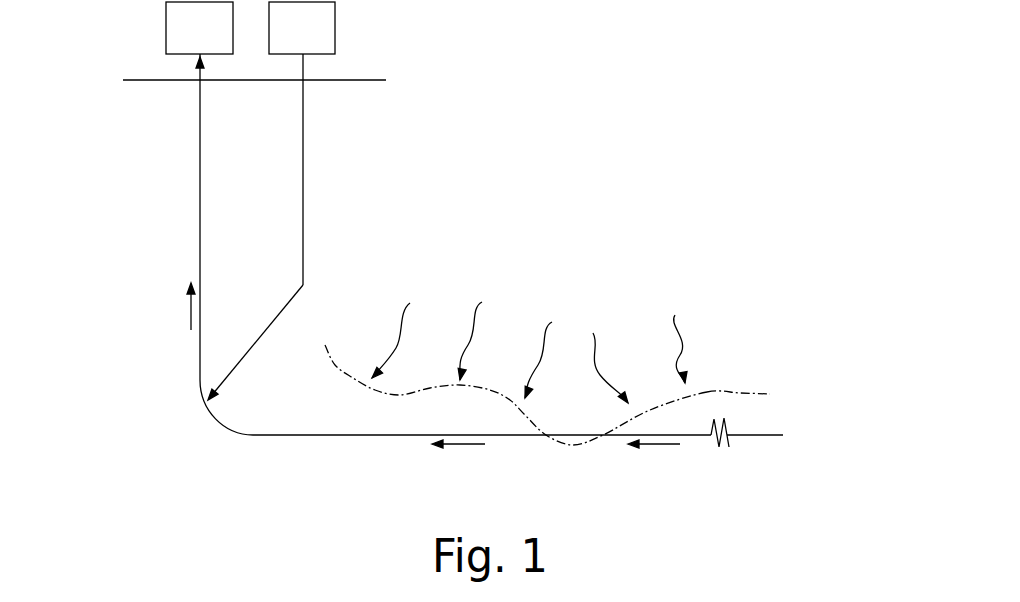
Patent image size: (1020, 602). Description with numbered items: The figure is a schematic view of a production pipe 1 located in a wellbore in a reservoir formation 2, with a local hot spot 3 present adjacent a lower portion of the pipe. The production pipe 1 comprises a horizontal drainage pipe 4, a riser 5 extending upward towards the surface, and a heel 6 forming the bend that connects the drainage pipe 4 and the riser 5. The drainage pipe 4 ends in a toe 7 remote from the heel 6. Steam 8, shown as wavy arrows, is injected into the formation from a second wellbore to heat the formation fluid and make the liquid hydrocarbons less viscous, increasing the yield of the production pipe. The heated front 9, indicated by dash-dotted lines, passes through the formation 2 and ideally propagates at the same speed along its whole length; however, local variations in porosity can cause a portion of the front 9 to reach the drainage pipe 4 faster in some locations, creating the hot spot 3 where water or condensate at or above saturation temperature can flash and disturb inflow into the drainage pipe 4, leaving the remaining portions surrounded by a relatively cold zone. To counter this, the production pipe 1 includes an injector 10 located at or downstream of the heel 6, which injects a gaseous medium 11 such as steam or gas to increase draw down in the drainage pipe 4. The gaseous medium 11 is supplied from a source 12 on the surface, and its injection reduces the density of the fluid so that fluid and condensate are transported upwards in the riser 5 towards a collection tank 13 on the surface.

The production pipe 1 is at (116, 301).
The reservoir formation 2 is at (461, 222).
The local hot spot 3 is at (584, 465).
The drainage pipe 4 is at (382, 436).
The riser 5 is at (200, 249).
The heel 6 is at (228, 425).
The toe 7 is at (751, 440).
The steam 8 is at (675, 315).
The heated front 9 is at (708, 392).
The injector 10 is at (186, 410).
The gaseous medium 11 is at (318, 220).
The source 12 is at (286, 43).
The collection tank 13 is at (183, 43).